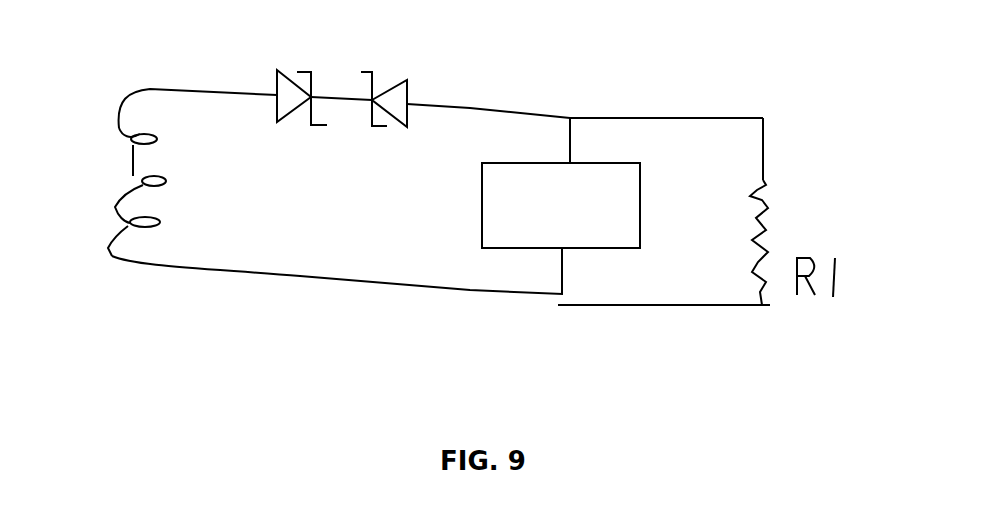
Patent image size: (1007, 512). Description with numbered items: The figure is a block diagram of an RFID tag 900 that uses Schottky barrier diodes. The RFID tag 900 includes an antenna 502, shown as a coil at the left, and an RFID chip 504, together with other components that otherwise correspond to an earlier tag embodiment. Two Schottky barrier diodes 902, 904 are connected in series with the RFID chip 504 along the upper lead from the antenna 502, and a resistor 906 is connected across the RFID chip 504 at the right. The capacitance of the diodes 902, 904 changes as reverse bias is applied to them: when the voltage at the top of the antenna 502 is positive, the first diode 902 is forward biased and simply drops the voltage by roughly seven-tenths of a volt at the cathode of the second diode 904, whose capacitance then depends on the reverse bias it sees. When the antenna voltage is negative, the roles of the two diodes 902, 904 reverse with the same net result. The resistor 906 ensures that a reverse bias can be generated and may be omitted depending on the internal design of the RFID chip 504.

The RFID tag 900 is at (695, 410).
The antenna 502 is at (115, 207).
The first Schottky barrier diode 902 is at (299, 71).
The second Schottky barrier diode 904 is at (362, 71).
The RFID chip 504 is at (482, 196).
The resistor R1 906 is at (763, 196).